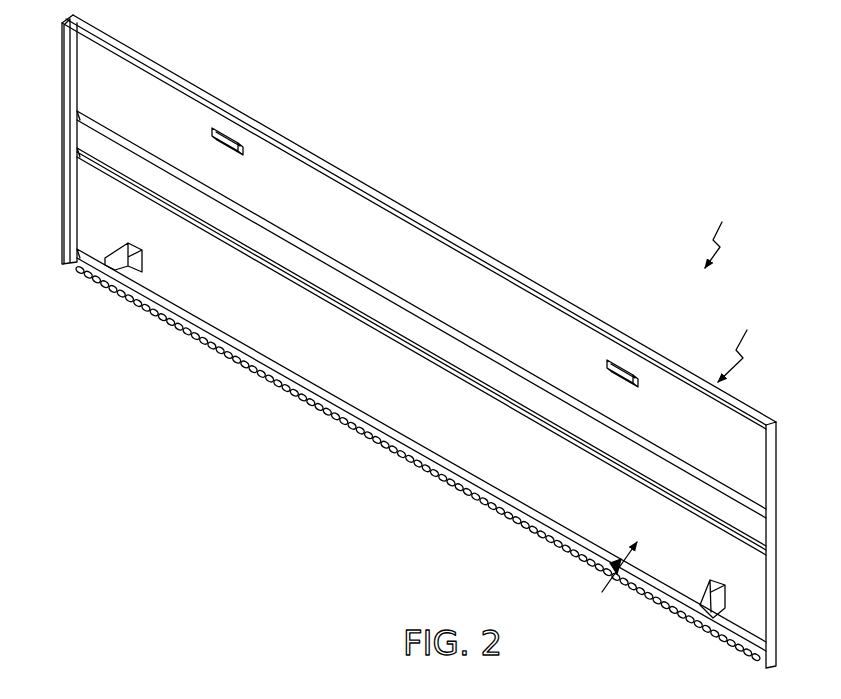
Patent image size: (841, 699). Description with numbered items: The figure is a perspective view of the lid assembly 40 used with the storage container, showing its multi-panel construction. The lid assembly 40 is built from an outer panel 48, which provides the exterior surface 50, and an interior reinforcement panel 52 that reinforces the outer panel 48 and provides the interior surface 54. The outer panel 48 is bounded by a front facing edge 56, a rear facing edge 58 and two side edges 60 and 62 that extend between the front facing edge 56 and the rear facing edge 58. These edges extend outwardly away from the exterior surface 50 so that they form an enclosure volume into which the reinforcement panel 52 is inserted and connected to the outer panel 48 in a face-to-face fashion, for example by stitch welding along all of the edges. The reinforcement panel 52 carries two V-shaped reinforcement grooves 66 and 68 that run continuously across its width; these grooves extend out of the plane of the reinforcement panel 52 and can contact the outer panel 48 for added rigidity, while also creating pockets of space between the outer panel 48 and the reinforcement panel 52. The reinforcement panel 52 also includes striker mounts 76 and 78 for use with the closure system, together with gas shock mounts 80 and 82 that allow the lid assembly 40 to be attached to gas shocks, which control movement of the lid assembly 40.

The lid assembly 40 is at (729, 230).
The outer panel 48 is at (745, 342).
The exterior surface 50 is at (420, 341).
The interior reinforcement panel 52 is at (605, 581).
The interior surface 54 is at (420, 455).
The front facing edge 56 is at (426, 222).
The rear facing edge 58 is at (463, 497).
The side edge 60 is at (62, 137).
The side edge 62 is at (778, 497).
The V-shaped reinforcement groove 66 is at (320, 247).
The V-shaped reinforcement groove 68 is at (445, 375).
The striker mount 76 is at (225, 137).
The striker mount 78 is at (615, 365).
The gas shock mount 80 is at (108, 250).
The gas shock mount 82 is at (725, 600).